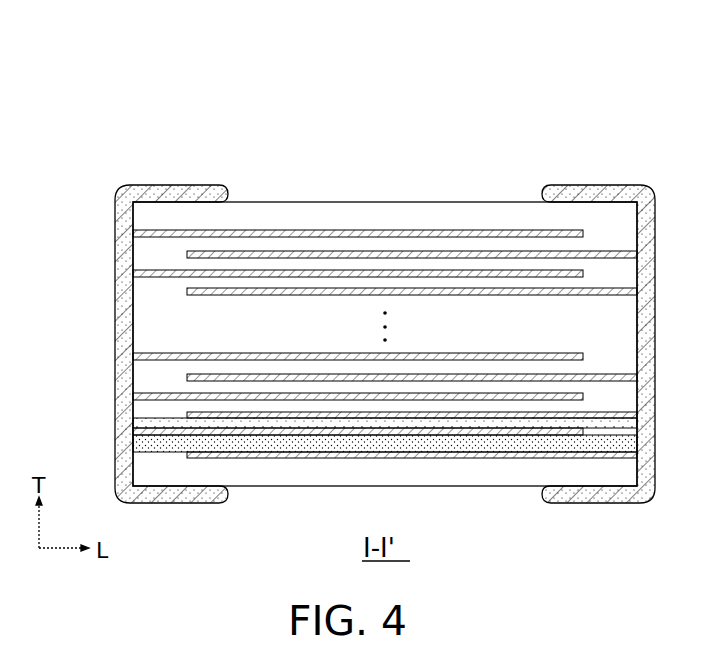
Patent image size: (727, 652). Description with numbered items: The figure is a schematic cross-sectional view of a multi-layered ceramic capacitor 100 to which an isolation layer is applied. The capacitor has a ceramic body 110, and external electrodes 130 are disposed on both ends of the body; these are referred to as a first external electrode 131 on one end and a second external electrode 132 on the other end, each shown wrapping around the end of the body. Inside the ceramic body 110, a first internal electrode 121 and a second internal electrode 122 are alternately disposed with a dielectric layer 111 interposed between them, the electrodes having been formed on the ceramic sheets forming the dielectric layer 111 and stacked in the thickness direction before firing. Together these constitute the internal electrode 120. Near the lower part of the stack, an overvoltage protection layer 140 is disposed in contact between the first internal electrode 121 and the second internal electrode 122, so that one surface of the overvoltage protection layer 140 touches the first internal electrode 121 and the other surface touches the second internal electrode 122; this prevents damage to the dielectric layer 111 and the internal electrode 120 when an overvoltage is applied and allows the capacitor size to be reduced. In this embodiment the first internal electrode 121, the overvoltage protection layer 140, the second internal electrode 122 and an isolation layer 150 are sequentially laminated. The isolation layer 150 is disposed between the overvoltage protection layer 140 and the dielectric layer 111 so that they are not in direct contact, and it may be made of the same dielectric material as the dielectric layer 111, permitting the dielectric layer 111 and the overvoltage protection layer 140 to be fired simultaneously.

The multi-layered ceramic capacitor 100 is at (222, 53).
The ceramic body 110 is at (268, 202).
The dielectric layer 111 is at (385, 327).
The internal electrode 120 is at (505, 152).
The first internal electrode 121 is at (426, 231).
The second internal electrode 122 is at (508, 251).
The external electrodes 130 is at (635, 97).
The first external electrode 131 is at (168, 185).
The second external electrode 132 is at (602, 185).
The overvoltage protection layer 140 is at (347, 443).
The isolation layer 150 is at (277, 430).